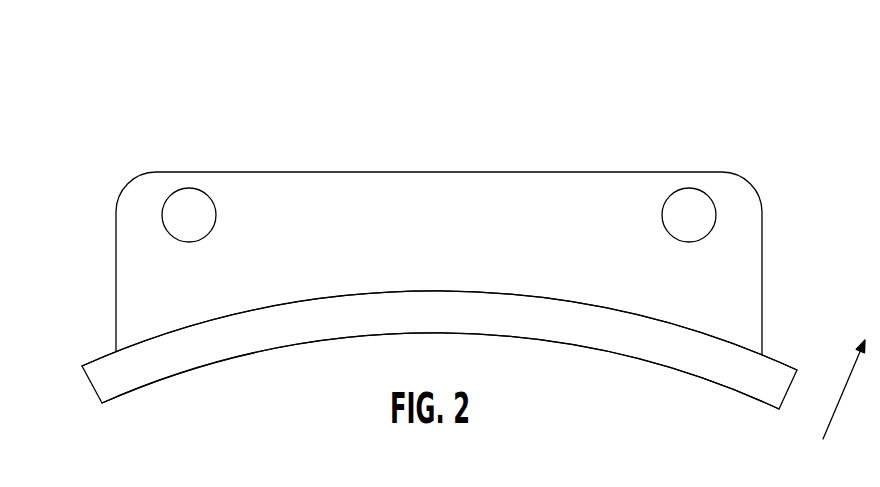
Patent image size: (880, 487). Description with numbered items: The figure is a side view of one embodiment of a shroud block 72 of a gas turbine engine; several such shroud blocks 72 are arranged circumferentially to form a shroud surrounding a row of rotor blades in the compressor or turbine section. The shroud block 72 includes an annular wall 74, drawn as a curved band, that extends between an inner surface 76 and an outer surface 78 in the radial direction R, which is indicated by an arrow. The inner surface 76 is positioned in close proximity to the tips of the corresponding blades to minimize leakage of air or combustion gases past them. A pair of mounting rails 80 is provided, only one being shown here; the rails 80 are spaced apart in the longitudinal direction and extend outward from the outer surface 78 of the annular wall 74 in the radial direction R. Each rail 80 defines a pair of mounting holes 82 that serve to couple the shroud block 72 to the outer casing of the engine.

The shroud block 72 is at (133, 48).
The annular wall 74 is at (80, 386).
The inner surface 76 is at (162, 375).
The outer surface 78 is at (100, 352).
The mounting rail 80 is at (472, 172).
The mounting holes 82 is at (198, 203).
The radial direction R is at (843, 393).